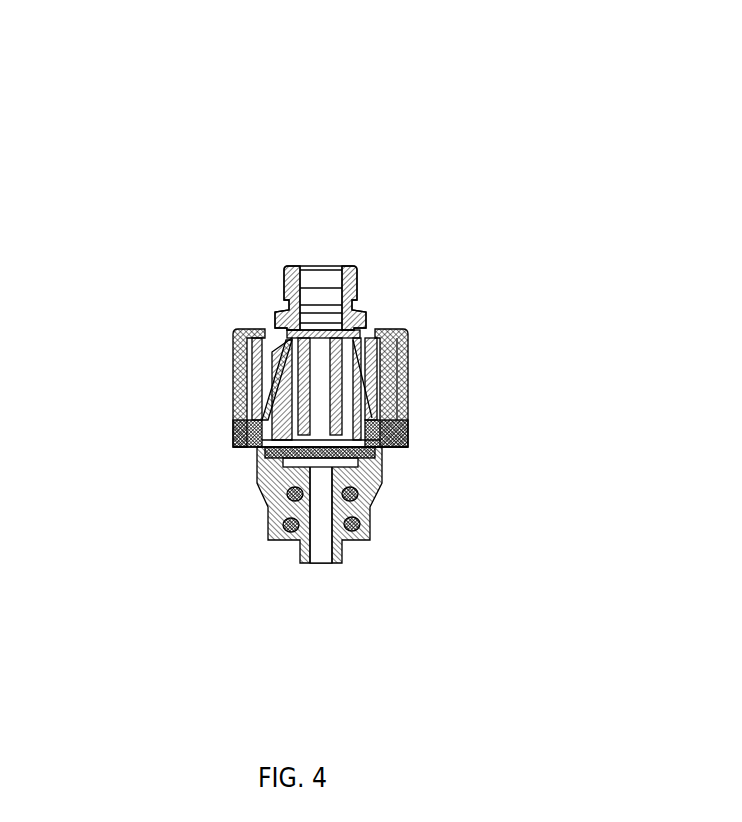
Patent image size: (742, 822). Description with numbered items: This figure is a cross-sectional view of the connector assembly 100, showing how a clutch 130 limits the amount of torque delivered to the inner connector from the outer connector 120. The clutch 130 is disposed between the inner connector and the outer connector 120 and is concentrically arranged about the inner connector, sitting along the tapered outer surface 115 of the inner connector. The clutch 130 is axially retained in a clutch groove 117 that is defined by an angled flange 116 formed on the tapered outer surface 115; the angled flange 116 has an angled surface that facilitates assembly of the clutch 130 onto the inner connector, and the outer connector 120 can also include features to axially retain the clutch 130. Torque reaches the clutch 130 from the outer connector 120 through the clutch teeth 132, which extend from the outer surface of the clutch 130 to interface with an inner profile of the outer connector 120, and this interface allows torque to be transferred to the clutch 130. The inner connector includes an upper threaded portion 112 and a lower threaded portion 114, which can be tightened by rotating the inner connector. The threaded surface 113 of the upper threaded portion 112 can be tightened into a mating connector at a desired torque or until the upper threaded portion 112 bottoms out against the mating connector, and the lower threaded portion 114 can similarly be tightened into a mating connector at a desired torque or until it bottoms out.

The connector assembly 100 is at (510, 153).
The upper threaded portion 112 is at (345, 287).
The threaded surface 113 is at (355, 302).
The lower threaded portion 114 is at (370, 540).
The tapered outer surface 115 is at (268, 363).
The angled flange 116 is at (265, 405).
The clutch groove 117 is at (233, 430).
The outer connector 120 is at (410, 352).
The clutch 130 is at (448, 487).
The clutch teeth 132 is at (410, 427).